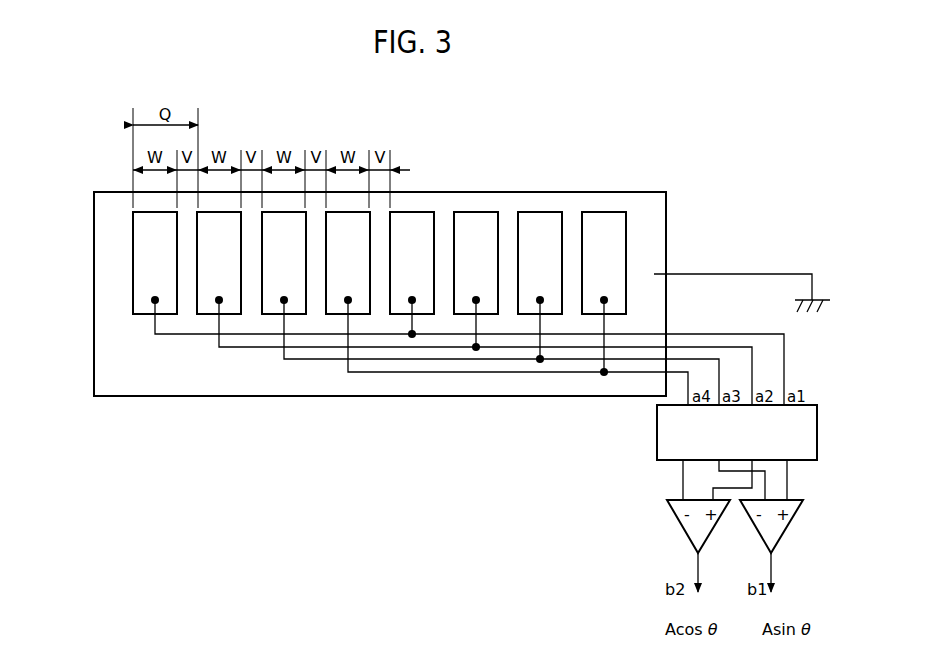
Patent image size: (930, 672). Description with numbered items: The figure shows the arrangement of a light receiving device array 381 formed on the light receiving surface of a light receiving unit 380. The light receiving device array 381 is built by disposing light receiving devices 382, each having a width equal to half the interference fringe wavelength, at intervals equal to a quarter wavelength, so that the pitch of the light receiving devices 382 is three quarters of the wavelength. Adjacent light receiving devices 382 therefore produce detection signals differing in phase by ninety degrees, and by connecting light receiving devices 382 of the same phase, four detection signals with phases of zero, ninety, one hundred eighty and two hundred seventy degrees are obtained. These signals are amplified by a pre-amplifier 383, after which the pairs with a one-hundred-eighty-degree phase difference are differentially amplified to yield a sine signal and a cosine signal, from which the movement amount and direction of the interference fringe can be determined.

The light receiving unit 380 is at (632, 203).
The light receiving device array 381 is at (120, 252).
The light receiving device 382 is at (132, 305).
The pre-amplifier 383 is at (657, 432).